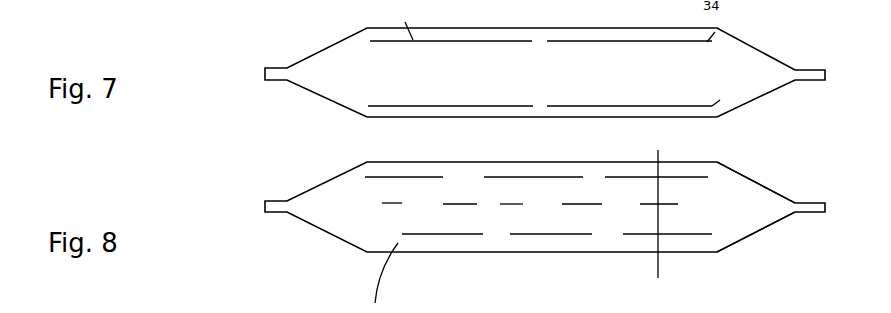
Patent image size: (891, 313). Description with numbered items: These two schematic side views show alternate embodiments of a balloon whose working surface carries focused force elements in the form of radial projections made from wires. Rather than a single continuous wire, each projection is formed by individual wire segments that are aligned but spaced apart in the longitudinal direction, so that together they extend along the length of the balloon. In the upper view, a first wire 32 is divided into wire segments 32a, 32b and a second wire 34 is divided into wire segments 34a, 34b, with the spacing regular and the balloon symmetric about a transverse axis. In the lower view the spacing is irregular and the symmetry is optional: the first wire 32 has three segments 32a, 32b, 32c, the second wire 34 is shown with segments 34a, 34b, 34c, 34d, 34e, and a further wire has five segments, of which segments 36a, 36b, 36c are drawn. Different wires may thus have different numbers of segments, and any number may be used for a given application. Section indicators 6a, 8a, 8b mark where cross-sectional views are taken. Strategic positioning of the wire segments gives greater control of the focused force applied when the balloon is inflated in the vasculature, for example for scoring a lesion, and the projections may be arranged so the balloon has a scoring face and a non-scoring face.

In FIG. 7, the second wire 34 is at (545, 72).
In FIG. 8, the second wire 34 is at (360, 213).
In FIG. 8, the first wire 32 is at (736, 156).
In FIG. 7, the wire segment 32a is at (412, 40).
In FIG. 8, the wire segment 32a is at (405, 176).
In FIG. 7, the wire segment 32b is at (707, 42).
In FIG. 8, the wire segment 32b is at (528, 176).
In FIG. 8, the wire segment 32c is at (695, 176).
In FIG. 7, the wire segment 34a is at (383, 106).
In FIG. 8, the wire segment 34a is at (385, 202).
In FIG. 7, the wire segment 34b is at (720, 100).
In FIG. 8, the wire segment 34b is at (463, 203).
In FIG. 8, the wire segment 34c is at (507, 208).
In FIG. 8, the wire segment 34d is at (587, 203).
In FIG. 8, the wire segment 34e is at (678, 203).
In FIG. 8, the wire segment 36a is at (448, 238).
In FIG. 8, the wire segment 36b is at (553, 238).
In FIG. 8, the wire segment 36c is at (628, 237).
In FIG. 7, the section line 6a is at (406, 20).
In FIG. 8, the section line 8a is at (683, 272).
In FIG. 8, the section line 8b is at (688, 145).